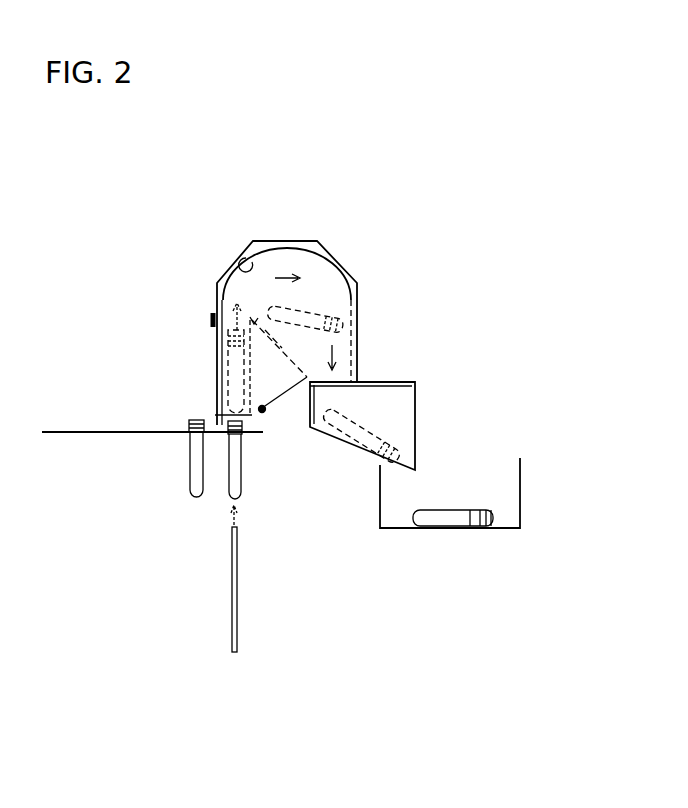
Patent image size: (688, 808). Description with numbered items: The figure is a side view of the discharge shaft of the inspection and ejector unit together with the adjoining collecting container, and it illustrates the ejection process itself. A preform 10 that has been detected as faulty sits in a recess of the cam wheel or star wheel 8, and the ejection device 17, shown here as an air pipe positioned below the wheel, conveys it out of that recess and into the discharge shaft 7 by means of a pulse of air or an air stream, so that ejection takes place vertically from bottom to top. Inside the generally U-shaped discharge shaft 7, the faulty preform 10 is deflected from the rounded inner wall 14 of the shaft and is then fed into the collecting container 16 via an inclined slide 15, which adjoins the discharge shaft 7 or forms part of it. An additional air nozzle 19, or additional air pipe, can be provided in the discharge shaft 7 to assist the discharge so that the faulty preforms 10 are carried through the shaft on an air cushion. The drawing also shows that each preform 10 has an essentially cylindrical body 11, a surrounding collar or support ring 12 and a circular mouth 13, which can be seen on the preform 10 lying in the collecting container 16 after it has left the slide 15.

The discharge shaft 7 is at (317, 241).
The star wheel 8 is at (168, 432).
The preform 10 is at (178, 506).
The cylindrical body 11 is at (437, 510).
The support ring 12 is at (481, 509).
The circular mouth 13 is at (491, 518).
The rounded inner wall 14 is at (238, 262).
The slide 15 is at (337, 434).
The collecting container 16 is at (522, 503).
The ejection device 17 is at (238, 604).
The additional air nozzle 19 is at (266, 412).